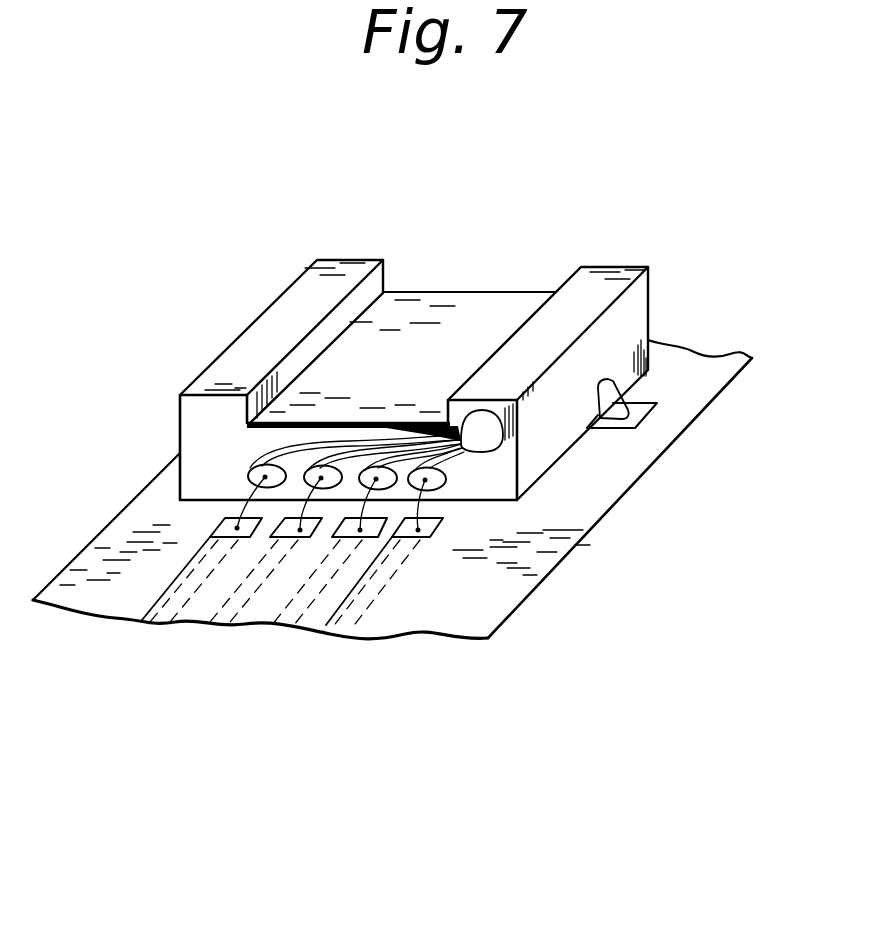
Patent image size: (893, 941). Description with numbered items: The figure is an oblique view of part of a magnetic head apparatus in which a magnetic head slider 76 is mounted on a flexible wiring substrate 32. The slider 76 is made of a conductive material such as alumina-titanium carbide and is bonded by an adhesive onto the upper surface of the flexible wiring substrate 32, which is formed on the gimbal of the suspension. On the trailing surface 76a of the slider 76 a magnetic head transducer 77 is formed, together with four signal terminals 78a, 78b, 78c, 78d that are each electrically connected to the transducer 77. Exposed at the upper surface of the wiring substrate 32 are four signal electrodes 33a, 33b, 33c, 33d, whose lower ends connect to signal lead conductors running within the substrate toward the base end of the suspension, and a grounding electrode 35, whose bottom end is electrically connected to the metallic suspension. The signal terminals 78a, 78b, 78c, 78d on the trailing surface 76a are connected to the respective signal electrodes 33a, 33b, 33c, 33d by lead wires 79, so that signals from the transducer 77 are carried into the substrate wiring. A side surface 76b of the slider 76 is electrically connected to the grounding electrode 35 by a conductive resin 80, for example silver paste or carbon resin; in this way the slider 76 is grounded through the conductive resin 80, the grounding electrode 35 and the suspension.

The magnetic head slider 76 is at (298, 264).
The trailing surface 76a is at (192, 413).
The side surface 76b is at (640, 303).
The magnetic head transducer 77 is at (490, 433).
The signal terminal 78a is at (262, 476).
The signal terminal 78b is at (325, 477).
The signal terminal 78c is at (377, 478).
The signal terminal 78d is at (425, 479).
The lead wire 79 is at (407, 518).
The conductive resin 80 is at (613, 388).
The flexible wiring substrate 32 is at (597, 488).
The grounding electrode 35 is at (642, 415).
The signal electrode 33a is at (125, 618).
The signal electrode 33b is at (278, 527).
The signal electrode 33c is at (336, 535).
The signal electrode 33d is at (429, 532).